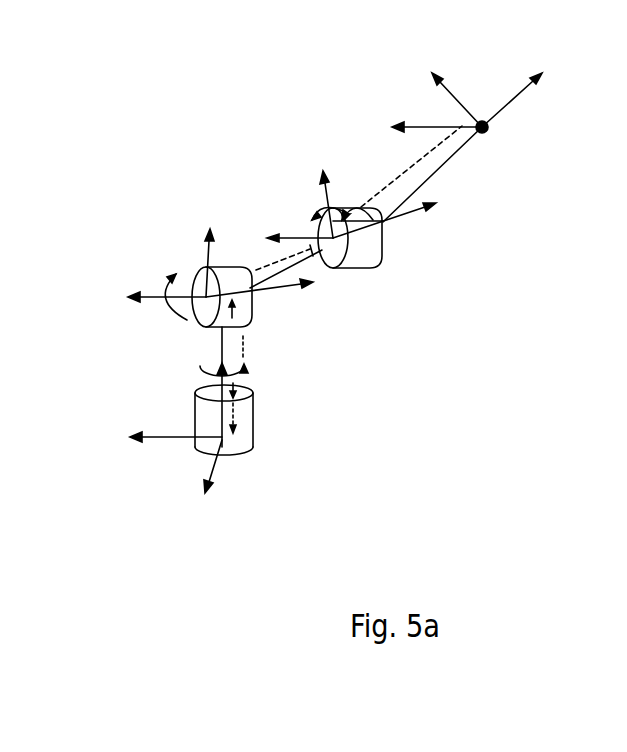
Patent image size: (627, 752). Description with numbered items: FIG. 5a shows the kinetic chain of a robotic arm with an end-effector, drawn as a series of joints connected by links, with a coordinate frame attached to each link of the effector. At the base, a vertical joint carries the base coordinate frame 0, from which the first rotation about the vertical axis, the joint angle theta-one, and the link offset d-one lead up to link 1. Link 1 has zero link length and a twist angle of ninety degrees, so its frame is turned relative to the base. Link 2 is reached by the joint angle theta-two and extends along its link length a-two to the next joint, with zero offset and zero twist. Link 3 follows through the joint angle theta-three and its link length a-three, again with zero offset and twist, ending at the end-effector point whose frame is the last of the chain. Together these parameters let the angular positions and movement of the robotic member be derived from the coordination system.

The base joint with base coordinate frame (X0, Y0, Z0), joint angle θ1 and link offs 0 is at (183, 429).
The link 1 is at (218, 266).
The link 2 is at (359, 197).
The link 3 is at (466, 95).